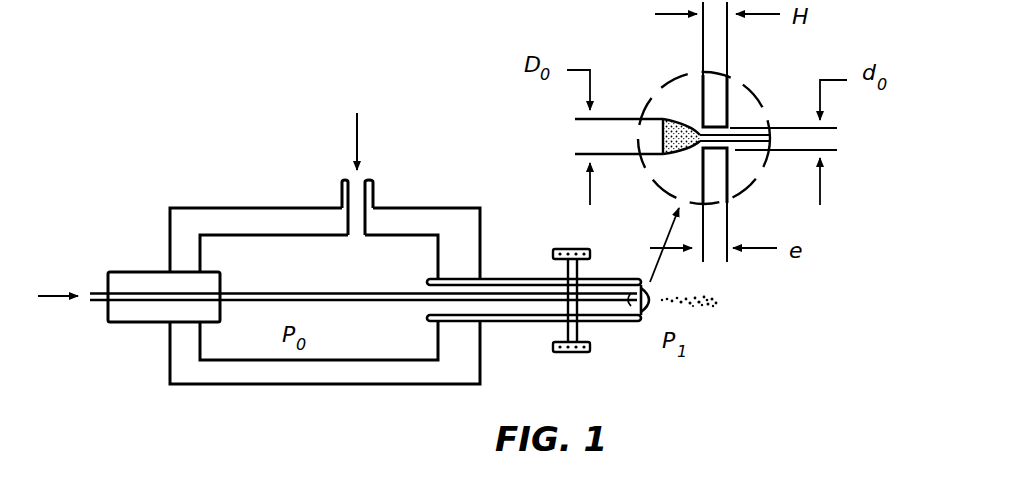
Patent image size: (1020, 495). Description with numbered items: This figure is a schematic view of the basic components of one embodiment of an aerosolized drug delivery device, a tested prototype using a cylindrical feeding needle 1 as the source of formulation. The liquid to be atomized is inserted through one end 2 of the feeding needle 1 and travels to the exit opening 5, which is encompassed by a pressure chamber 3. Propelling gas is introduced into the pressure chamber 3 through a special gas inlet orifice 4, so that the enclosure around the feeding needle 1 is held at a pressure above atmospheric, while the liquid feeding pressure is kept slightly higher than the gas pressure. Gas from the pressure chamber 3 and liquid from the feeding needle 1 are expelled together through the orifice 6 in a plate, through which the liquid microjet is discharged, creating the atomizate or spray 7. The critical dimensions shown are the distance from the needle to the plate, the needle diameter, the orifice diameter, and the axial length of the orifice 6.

The feeding needle 1 is at (297, 293).
The end of the feeding needle for inserting liquid 2 is at (57, 290).
The pressure chamber 3 is at (370, 358).
The gas inlet orifice 4 is at (357, 139).
The exit end of the feeding needle 5 is at (617, 147).
The withdrawal orifice 6 is at (749, 124).
The atomizate spray 7 is at (731, 314).